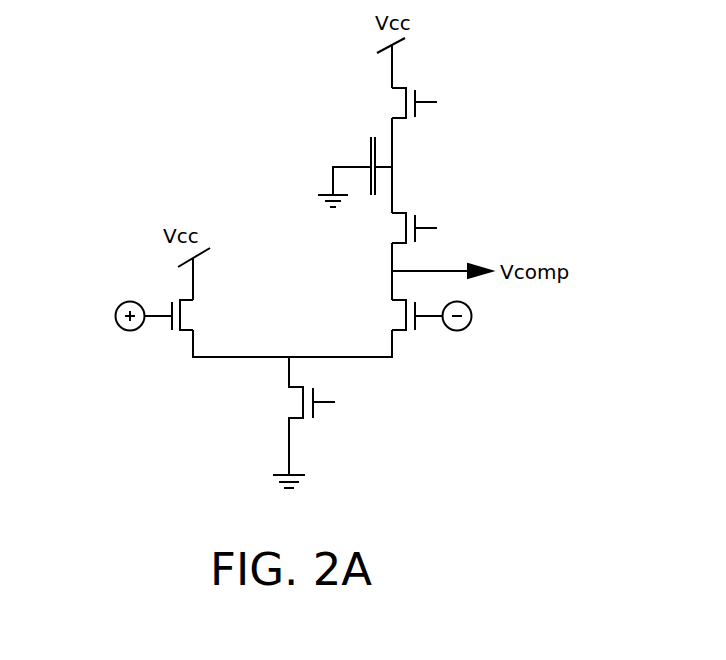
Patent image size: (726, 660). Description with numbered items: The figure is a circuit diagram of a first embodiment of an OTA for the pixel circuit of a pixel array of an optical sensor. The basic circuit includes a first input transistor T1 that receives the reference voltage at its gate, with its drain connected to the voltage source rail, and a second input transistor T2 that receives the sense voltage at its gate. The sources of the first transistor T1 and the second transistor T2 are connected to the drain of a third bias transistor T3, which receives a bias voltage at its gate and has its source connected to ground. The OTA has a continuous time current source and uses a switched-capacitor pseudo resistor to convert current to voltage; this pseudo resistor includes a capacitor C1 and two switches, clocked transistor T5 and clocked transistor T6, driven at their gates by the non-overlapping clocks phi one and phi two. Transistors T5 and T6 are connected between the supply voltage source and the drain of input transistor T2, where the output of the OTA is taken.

The first input transistor T1 is at (184, 316).
The second input transistor T2 is at (405, 318).
The third bias transistor T3 is at (301, 402).
The clocked transistor T5 is at (405, 101).
The clocked transistor T6 is at (405, 228).
The capacitor C1 is at (369, 164).
The operational transconductance amplifier OTA is at (158, 132).